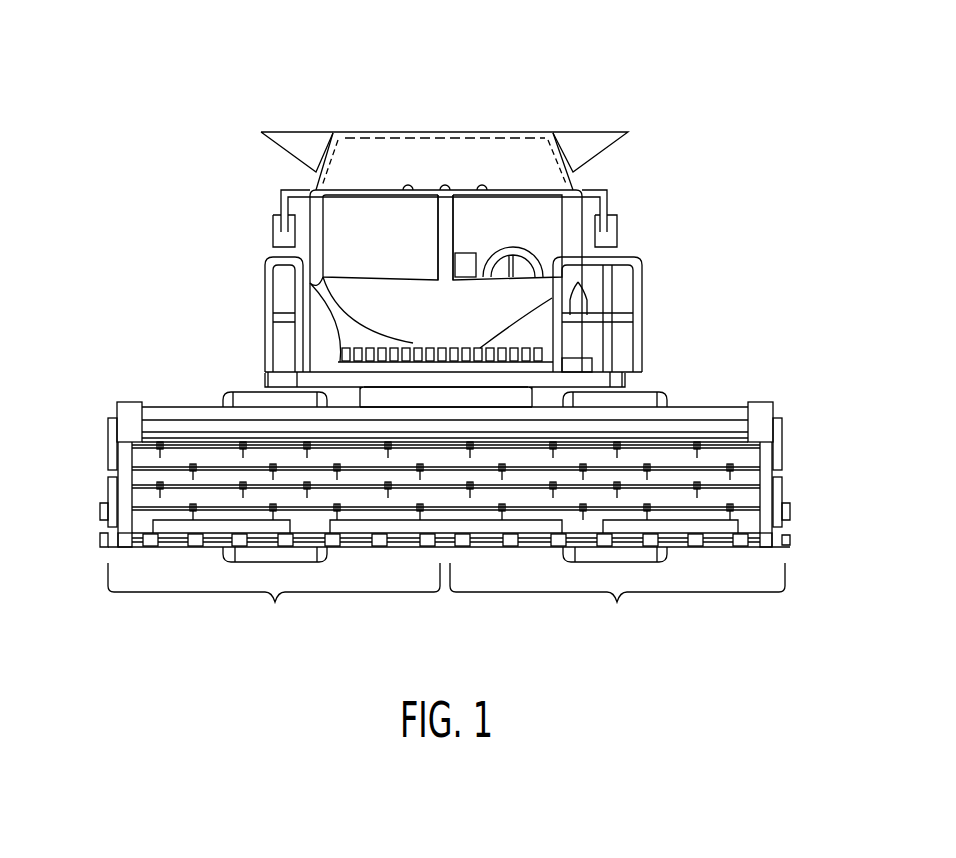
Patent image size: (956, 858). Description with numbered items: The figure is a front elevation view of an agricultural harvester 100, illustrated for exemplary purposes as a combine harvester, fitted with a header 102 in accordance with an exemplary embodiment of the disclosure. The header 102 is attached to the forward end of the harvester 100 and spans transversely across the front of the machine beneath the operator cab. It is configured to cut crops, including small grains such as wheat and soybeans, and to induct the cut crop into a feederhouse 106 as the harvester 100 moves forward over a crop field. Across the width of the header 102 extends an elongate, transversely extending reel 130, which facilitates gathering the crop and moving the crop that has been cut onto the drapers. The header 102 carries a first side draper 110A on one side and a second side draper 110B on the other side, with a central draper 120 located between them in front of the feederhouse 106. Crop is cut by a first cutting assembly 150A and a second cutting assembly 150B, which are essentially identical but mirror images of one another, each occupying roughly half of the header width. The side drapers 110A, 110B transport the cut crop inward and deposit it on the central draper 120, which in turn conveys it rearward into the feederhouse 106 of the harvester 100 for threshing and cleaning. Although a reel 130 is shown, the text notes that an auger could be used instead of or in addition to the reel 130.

The agricultural harvester 100 is at (360, 132).
The header 102 is at (436, 455).
The feederhouse 106 is at (502, 390).
The central draper 120 is at (530, 527).
The reel 130 is at (183, 495).
The first side draper 110A is at (172, 525).
The second side draper 110B is at (720, 525).
The first cutting assembly 150A is at (274, 598).
The second cutting assembly 150B is at (617, 598).